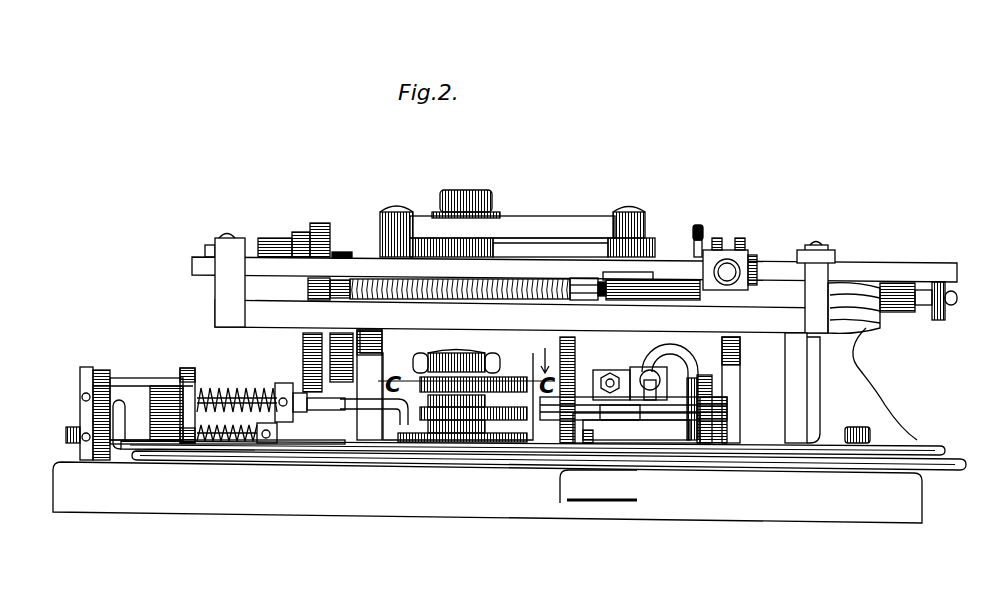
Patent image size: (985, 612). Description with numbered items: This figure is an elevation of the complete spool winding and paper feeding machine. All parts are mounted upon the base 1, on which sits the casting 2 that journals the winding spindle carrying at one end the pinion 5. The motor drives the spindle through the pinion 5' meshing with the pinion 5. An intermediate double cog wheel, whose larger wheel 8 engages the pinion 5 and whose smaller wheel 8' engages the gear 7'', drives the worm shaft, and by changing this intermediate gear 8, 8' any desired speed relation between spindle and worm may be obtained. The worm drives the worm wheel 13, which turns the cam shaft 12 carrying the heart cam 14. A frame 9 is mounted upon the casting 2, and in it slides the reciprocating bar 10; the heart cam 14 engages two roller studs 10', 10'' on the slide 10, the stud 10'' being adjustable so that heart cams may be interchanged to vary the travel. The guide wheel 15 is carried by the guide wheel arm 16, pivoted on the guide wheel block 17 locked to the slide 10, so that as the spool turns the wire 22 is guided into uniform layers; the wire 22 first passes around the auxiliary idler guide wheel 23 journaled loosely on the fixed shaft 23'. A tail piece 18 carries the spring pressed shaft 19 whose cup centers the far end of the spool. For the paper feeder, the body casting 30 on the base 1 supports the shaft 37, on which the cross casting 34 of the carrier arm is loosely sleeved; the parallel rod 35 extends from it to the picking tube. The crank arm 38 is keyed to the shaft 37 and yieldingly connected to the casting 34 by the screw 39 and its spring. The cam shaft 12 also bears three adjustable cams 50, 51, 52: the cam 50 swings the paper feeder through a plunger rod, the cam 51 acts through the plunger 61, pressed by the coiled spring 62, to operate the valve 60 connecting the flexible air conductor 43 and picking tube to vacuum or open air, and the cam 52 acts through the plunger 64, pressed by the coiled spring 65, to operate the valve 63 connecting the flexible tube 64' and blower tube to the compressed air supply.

The base 1 is at (818, 507).
The casting 2 is at (497, 340).
The pinion 5 is at (298, 312).
The pinion 5' is at (300, 225).
The gear 7'' is at (353, 231).
The intermediate gear 8 is at (291, 362).
The intermediate gear 8' is at (330, 385).
The frame 9 is at (803, 323).
The reciprocating bar 10 is at (574, 257).
The roller stud 10' is at (405, 218).
The roller stud 10'' is at (647, 225).
The cam shaft 12 is at (450, 190).
The worm wheel 13 is at (503, 278).
The heart cam 14 is at (498, 228).
The guide wheel 15 is at (700, 227).
The guide wheel arm 16 is at (727, 258).
The guide wheel block 17 is at (740, 247).
The tail piece 18 is at (843, 368).
The spring pressed shaft 19 is at (917, 312).
The wire 22 is at (693, 363).
The auxiliary idler guide wheel 23 is at (736, 401).
The fixed shaft 23' is at (600, 460).
The body casting 30 is at (728, 405).
The cross casting 34 is at (625, 420).
The parallel rod 35 is at (607, 377).
The shaft 37 is at (540, 433).
The crank arm 38 is at (637, 385).
The screw 39 is at (660, 420).
The flexible air conductor 43 is at (113, 392).
The cam 50 is at (433, 430).
The cam 51 is at (450, 430).
The cam 52 is at (473, 430).
The valve 60 is at (162, 387).
The plunger 61 is at (390, 430).
The coiled spring 62 is at (247, 392).
The valve 63 is at (102, 440).
The plunger 64 is at (227, 484).
The flexible tube 64' is at (549, 498).
The coiled spring 65 is at (182, 372).